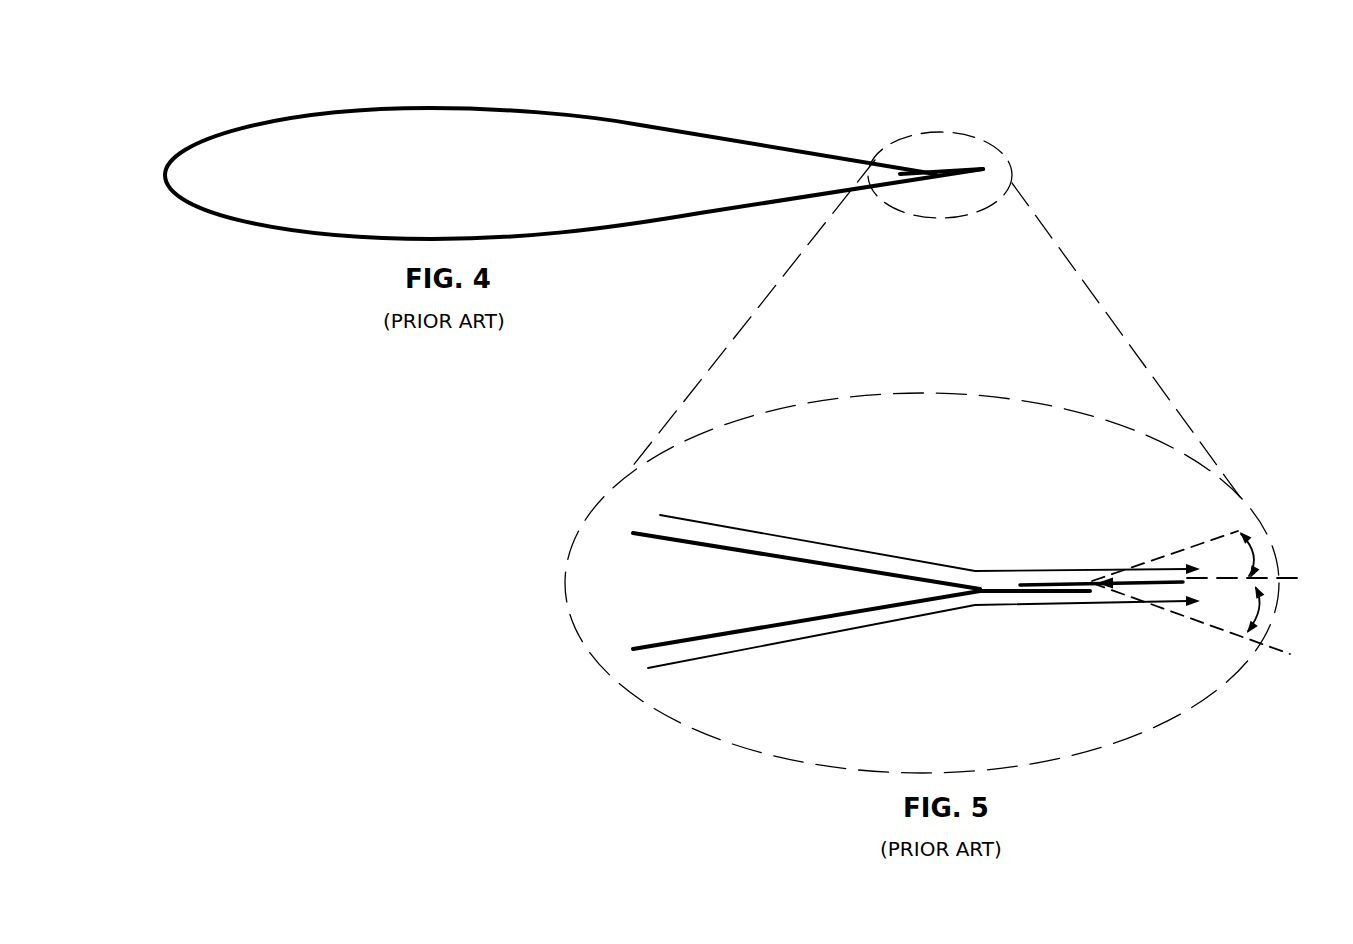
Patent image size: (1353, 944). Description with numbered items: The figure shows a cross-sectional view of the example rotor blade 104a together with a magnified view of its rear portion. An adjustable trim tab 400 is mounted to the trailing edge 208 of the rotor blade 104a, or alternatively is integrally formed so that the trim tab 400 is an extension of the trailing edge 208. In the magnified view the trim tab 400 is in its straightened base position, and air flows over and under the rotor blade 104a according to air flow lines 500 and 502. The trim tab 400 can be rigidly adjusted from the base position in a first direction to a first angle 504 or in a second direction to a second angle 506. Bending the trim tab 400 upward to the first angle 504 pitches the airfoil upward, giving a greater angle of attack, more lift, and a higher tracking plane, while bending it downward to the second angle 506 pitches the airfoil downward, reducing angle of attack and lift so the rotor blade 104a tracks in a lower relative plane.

In FIG. 4, the rotor blade 104a is at (656, 128).
In FIG. 5, the rotor blade 104a is at (682, 541).
In FIG. 4, the trailing edge 208 is at (885, 114).
In FIG. 4, the trim tab 400 is at (967, 169).
In FIG. 5, the trim tab 400 is at (1047, 584).
In FIG. 5, the air flow line 500 is at (746, 530).
In FIG. 5, the air flow line 502 is at (757, 649).
In FIG. 5, the first angle 504 is at (1253, 556).
In FIG. 5, the second angle 506 is at (1259, 612).